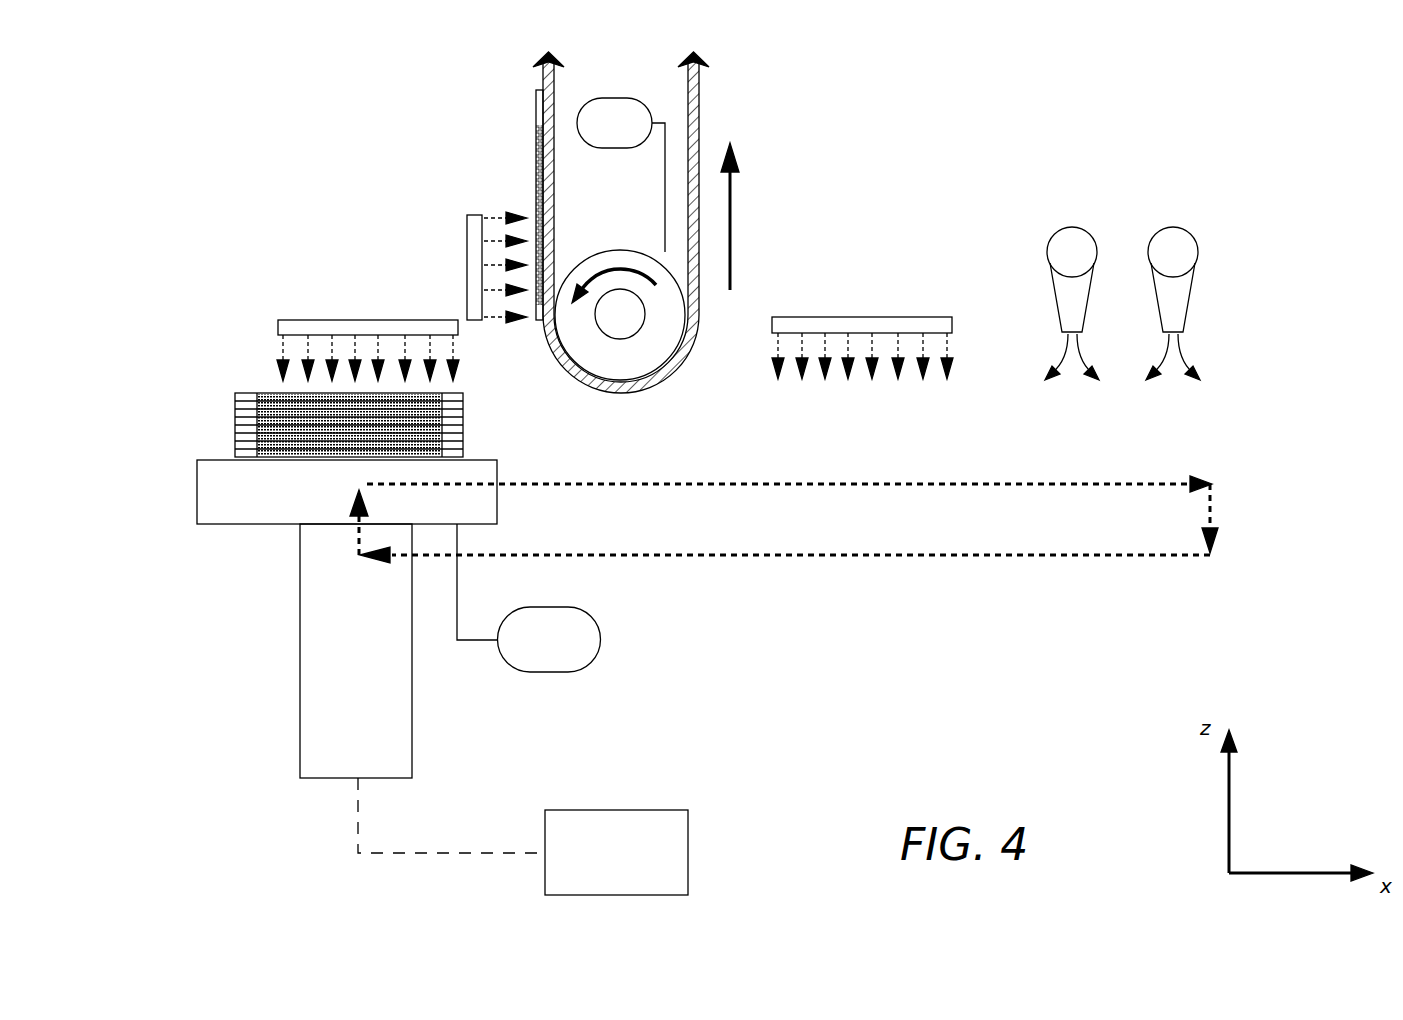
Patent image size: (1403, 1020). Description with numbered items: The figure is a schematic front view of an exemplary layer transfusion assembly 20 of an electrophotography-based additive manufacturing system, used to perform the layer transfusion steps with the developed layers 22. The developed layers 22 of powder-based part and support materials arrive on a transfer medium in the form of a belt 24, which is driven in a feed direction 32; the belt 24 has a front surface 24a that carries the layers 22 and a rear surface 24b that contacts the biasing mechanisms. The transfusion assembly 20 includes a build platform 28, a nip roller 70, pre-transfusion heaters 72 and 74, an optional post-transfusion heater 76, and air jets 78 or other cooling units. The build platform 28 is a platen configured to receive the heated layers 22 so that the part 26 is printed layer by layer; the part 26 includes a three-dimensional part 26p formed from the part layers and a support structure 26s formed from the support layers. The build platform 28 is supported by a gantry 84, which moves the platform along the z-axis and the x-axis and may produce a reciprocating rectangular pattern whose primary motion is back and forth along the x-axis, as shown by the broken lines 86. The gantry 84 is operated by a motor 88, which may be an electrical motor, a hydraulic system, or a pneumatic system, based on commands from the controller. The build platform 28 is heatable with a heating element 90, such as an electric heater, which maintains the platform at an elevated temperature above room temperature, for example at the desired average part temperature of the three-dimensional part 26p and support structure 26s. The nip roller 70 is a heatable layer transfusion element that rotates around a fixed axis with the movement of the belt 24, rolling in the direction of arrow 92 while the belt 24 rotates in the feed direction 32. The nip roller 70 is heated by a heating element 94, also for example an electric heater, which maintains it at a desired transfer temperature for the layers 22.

The transfusion assembly 20 is at (1284, 578).
The developed layers 22 is at (523, 164).
The transfer medium 24 is at (520, 79).
The front surface 24a is at (699, 113).
The rear surface 24b is at (554, 90).
The 3D part 26 is at (337, 395).
The 3D part 26p is at (272, 393).
The support structure 26s is at (235, 425).
The build platform 28 is at (197, 498).
The feed direction 32 is at (733, 193).
The nip roller 70 is at (572, 262).
The pre-transfusion heater 72 is at (455, 220).
The pre-transfusion heater 74 is at (315, 298).
The post-transfusion heater 76 is at (855, 300).
The air jets 78 is at (1174, 227).
The gantry 84 is at (412, 718).
The broken lines 86 is at (910, 560).
The motor 88 is at (688, 838).
The heating element 90 is at (600, 630).
The arrow 92 is at (641, 268).
The heating element 94 is at (600, 98).